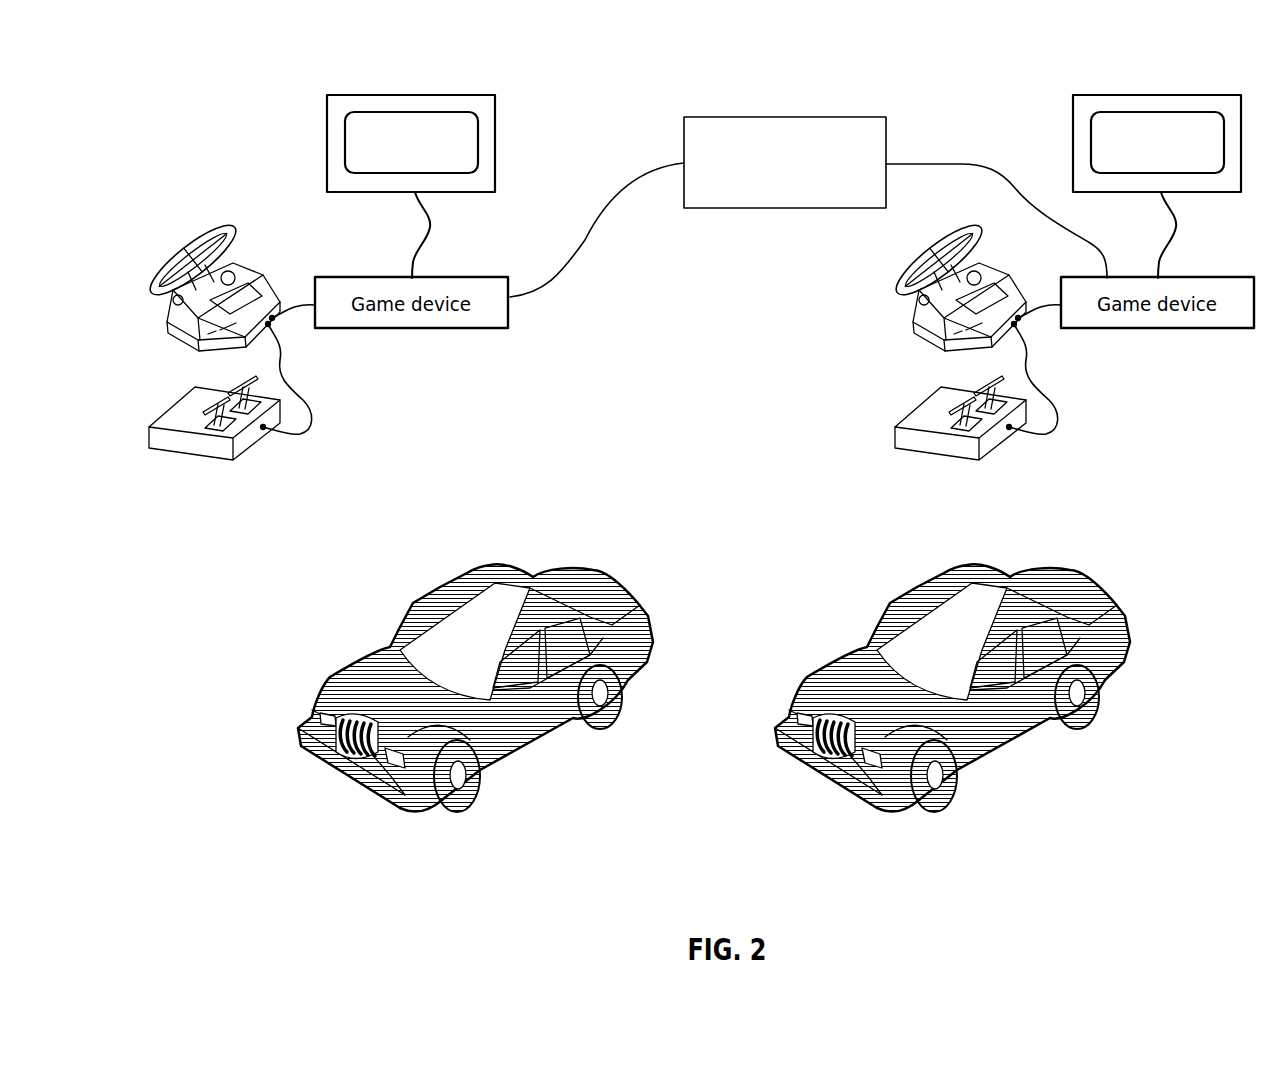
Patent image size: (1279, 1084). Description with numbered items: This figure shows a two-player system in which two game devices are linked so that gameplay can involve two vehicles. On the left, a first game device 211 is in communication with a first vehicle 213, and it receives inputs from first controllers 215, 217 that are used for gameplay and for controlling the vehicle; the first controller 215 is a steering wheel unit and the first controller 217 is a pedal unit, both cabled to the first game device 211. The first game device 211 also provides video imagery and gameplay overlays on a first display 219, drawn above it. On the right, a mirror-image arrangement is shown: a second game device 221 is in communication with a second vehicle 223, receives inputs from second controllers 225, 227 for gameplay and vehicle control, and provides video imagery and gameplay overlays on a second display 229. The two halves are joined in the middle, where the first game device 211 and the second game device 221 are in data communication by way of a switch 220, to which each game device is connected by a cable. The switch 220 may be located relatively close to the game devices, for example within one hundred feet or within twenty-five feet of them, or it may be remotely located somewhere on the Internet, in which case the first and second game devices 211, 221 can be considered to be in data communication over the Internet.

The first game device 211 is at (450, 276).
The first vehicle 213 is at (567, 565).
The first controller 215 is at (195, 248).
The first controller 217 is at (183, 448).
The first display 219 is at (408, 93).
The switch 220 is at (787, 117).
The second game device 221 is at (1190, 276).
The second vehicle 223 is at (1044, 565).
The second controller 225 is at (925, 260).
The second controller 227 is at (918, 402).
The second display 229 is at (1157, 93).